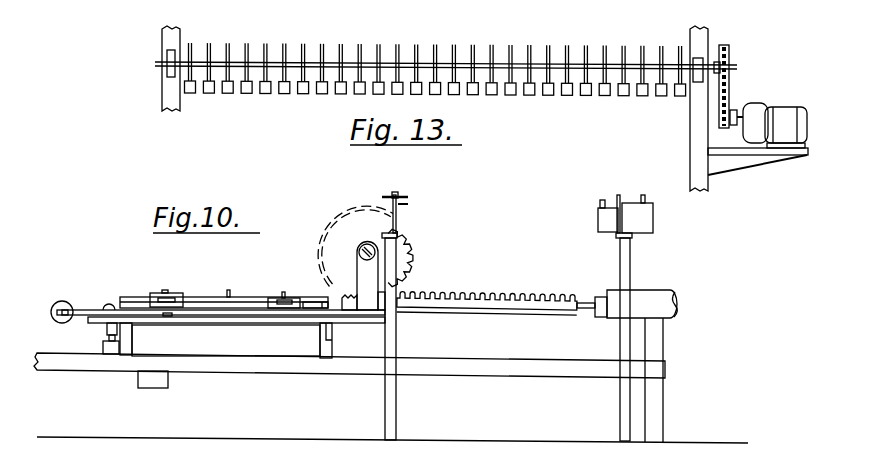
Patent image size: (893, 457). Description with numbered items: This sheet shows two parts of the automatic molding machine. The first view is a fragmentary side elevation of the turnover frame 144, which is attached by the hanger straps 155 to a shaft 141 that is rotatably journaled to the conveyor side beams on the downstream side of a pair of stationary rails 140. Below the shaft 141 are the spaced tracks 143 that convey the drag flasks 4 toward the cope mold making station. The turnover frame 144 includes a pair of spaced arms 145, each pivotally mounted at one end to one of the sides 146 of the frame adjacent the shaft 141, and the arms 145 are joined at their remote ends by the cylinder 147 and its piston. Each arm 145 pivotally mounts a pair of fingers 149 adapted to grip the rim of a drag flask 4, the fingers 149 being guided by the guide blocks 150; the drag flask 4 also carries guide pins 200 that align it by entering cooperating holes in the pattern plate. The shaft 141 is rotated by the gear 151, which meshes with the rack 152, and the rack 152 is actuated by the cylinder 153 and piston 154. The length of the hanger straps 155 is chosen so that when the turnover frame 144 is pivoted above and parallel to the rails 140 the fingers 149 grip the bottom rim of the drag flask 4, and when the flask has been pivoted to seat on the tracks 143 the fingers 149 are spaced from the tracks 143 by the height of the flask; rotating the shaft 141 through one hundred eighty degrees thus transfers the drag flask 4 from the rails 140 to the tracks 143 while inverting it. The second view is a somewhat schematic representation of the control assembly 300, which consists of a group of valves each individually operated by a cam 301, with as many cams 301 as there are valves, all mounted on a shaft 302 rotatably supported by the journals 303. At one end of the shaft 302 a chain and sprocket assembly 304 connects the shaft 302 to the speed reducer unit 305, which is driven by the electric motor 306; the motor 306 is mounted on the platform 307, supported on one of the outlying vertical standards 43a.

In FIG. 13, the control assembly 300 is at (763, 113).
In FIG. 13, the cam 301 is at (267, 47).
In FIG. 13, the shaft 302 is at (599, 60).
In FIG. 13, the journals 303 is at (170, 52).
In FIG. 13, the chain and sprocket assembly 304 is at (729, 57).
In FIG. 13, the speed reducer unit 305 is at (752, 127).
In FIG. 13, the electric motor 306 is at (775, 112).
In FIG. 13, the platform 307 is at (782, 160).
In FIG. 13, the outlying vertical standard 43a is at (167, 100).
In FIG. 10, the drag flask 4 is at (252, 347).
In FIG. 10, the stationary rails 140 is at (402, 196).
In FIG. 10, the shaft 141 is at (355, 248).
In FIG. 10, the spaced tracks 143 is at (78, 365).
In FIG. 10, the turnover frame 144 is at (120, 252).
In FIG. 10, the arms 145 is at (73, 305).
In FIG. 10, the sides of the turnover frame 146 is at (95, 320).
In FIG. 10, the cylinder 147 is at (52, 300).
In FIG. 10, the fingers 149 is at (172, 300).
In FIG. 10, the guide blocks 150 is at (153, 300).
In FIG. 10, the gear 151 is at (410, 247).
In FIG. 10, the rack 152 is at (510, 297).
In FIG. 10, the cylinder 153 is at (652, 290).
In FIG. 10, the piston 154 is at (581, 297).
In FIG. 10, the hanger straps 155 is at (370, 270).
In FIG. 10, the guide pins 200 is at (230, 290).